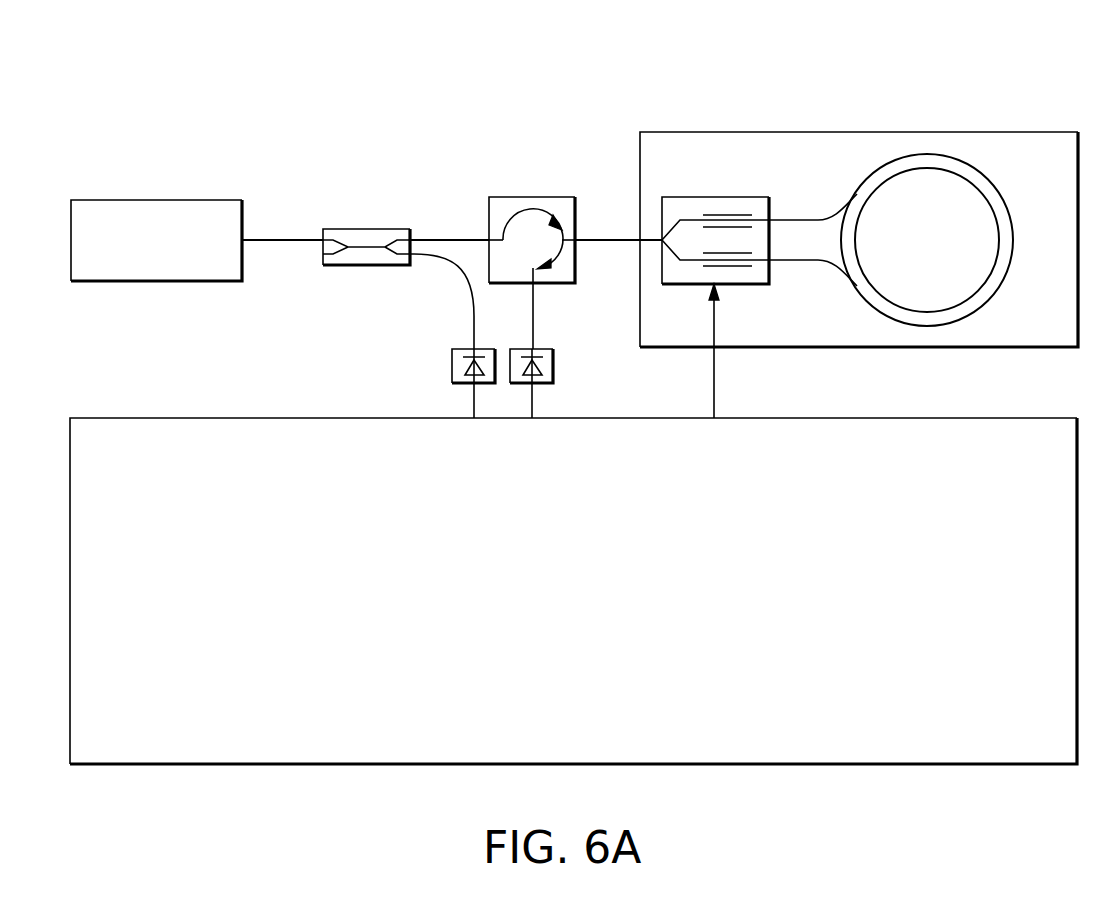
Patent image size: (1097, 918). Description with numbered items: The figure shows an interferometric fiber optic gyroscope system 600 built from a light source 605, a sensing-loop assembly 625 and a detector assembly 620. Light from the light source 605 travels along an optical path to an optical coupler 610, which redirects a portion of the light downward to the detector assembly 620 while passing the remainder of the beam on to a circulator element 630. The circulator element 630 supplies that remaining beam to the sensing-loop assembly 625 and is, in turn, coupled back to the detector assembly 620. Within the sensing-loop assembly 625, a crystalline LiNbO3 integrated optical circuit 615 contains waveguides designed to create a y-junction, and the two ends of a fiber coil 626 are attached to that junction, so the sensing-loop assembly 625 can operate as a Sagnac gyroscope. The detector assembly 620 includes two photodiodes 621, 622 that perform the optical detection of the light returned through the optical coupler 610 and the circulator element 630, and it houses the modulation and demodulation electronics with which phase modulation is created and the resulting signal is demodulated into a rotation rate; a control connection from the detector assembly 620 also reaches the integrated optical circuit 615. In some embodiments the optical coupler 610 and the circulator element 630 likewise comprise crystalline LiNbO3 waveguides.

The interferometric fiber optic gyroscope system 600 is at (193, 92).
The light source 605 is at (157, 200).
The optical coupler 610 is at (365, 229).
The circulator element 630 is at (528, 197).
The photodiode 621 is at (453, 368).
The photodiode 622 is at (553, 368).
The sensing-loop assembly 625 is at (1013, 132).
The integrated optical circuit 615 is at (715, 197).
The fiber coil 626 is at (878, 178).
The detector assembly 620 is at (277, 418).